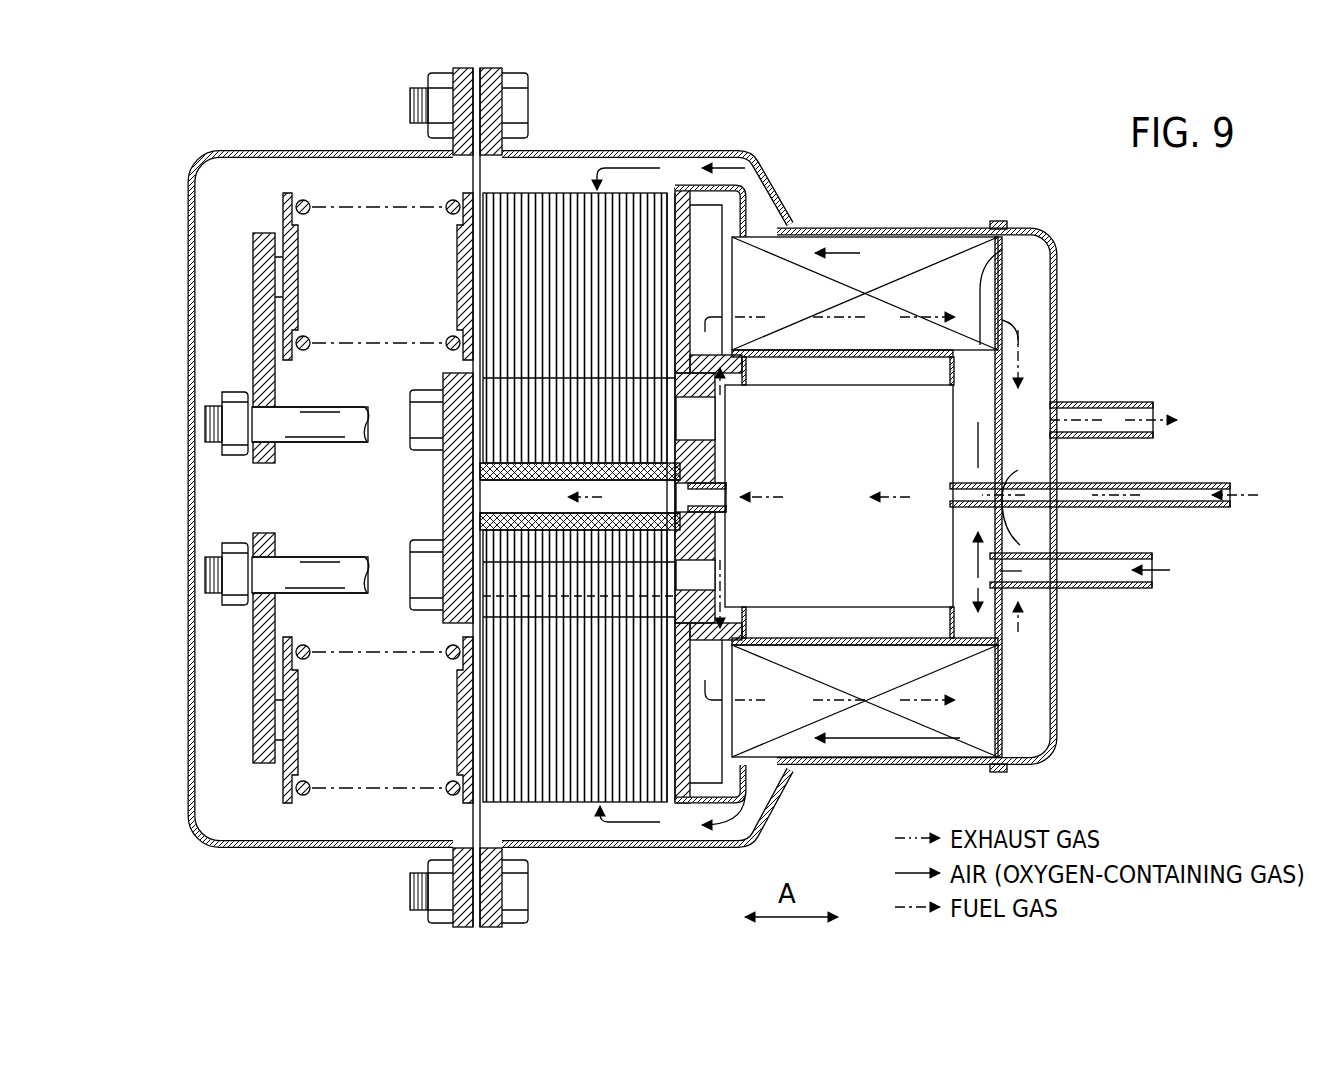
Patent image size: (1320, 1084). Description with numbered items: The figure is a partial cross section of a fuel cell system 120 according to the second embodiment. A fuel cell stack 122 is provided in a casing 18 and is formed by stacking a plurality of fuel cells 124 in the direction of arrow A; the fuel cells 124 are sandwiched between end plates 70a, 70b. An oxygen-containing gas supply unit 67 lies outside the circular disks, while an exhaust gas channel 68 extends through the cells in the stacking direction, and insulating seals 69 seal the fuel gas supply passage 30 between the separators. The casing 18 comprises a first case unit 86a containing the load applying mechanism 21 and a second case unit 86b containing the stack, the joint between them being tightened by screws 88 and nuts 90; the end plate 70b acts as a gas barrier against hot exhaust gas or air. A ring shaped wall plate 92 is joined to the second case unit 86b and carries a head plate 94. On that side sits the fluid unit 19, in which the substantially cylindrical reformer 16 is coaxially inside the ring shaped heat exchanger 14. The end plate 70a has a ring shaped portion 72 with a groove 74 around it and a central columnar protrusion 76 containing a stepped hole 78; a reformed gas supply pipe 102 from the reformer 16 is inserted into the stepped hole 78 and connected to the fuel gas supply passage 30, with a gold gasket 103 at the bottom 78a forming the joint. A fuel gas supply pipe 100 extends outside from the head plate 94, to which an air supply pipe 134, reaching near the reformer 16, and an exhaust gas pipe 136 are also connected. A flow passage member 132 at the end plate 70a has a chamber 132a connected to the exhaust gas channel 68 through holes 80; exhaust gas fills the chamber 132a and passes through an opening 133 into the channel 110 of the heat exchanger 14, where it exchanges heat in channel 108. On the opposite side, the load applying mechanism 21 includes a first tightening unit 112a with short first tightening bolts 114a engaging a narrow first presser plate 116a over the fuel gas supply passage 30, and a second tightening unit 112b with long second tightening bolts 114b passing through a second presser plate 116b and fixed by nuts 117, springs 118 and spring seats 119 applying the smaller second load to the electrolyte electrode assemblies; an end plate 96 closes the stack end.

The heat exchanger 14 is at (981, 258).
The reformer 16 is at (867, 397).
The casing 18 is at (802, 210).
The fluid unit 19 is at (987, 176).
The load applying mechanism 21 is at (385, 493).
The fuel gas supply passage 30 is at (470, 500).
The oxygen-containing gas supply unit 67 is at (647, 808).
The exhaust gas channel 68 is at (683, 424).
The insulating seals 69 is at (580, 496).
The end plate 70a is at (683, 275).
The end plate 70b is at (476, 826).
The ring shaped portion 72 is at (762, 828).
The groove 74 is at (735, 800).
The columnar protrusion 76 is at (712, 507).
The stepped hole 78 is at (715, 528).
The bottom of the stepped hole 78a is at (690, 510).
The holes 80 is at (700, 572).
The first case unit 86a is at (302, 150).
The second case unit 86b is at (600, 150).
The screws 88 is at (508, 102).
The nuts 90 is at (416, 108).
The ring shaped wall plate 92 is at (856, 764).
The head plate 94 is at (1058, 680).
The end plate 96 is at (752, 205).
The fuel gas supply pipe 100 is at (1195, 483).
The reformed gas supply pipe 102 is at (715, 492).
The gold gasket 103 is at (705, 460).
The heat exchange channel 108 is at (980, 730).
The channel 110 is at (818, 682).
The first tightening unit 112a is at (440, 518).
The second tightening unit 112b is at (278, 595).
The first tightening bolts 114a is at (418, 425).
The second tightening bolts 114b is at (208, 426).
The first presser plate 116a is at (460, 480).
The second presser plate 116b is at (262, 320).
The nuts 117 is at (238, 552).
The springs 118 is at (305, 797).
The spring seats 119 is at (456, 732).
The fuel cell system 120 is at (1166, 200).
The fuel cell stack 122 is at (634, 176).
The fuel cells 124 is at (537, 197).
The flow passage member 132 is at (742, 186).
The chamber 132a is at (700, 790).
The opening 133 is at (732, 722).
The air supply pipe 134 is at (1118, 588).
The exhaust gas pipe 136 is at (1108, 402).